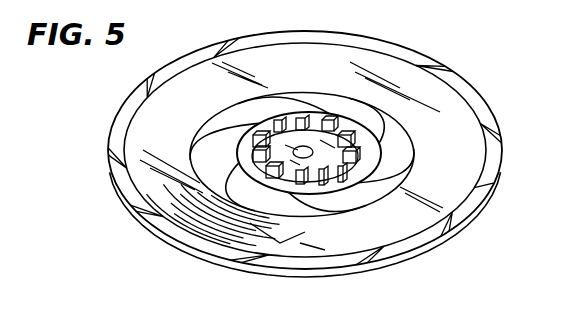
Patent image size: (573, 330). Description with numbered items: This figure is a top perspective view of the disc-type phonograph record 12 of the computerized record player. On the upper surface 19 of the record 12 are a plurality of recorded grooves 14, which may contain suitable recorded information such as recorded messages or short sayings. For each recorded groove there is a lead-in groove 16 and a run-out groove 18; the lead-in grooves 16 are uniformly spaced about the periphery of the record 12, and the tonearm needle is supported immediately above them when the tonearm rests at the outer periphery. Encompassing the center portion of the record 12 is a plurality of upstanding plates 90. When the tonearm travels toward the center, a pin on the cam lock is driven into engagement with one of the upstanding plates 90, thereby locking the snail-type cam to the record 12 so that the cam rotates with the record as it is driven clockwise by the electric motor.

The disc-type phonograph record 12 is at (418, 46).
The recorded grooves 14 is at (248, 223).
The lead-in groove 16 is at (441, 230).
The run-out groove 18 is at (200, 147).
The upper surface 19 is at (460, 170).
The upstanding plates 90 is at (322, 112).